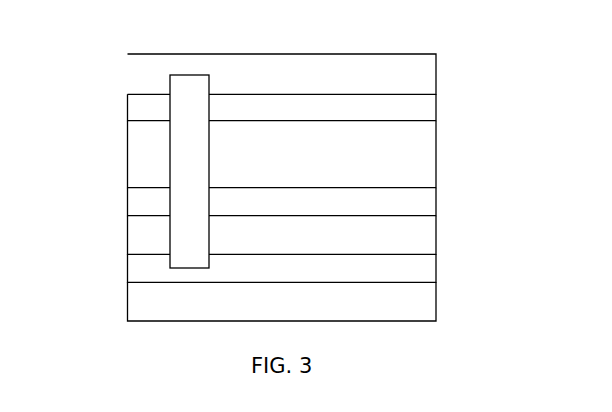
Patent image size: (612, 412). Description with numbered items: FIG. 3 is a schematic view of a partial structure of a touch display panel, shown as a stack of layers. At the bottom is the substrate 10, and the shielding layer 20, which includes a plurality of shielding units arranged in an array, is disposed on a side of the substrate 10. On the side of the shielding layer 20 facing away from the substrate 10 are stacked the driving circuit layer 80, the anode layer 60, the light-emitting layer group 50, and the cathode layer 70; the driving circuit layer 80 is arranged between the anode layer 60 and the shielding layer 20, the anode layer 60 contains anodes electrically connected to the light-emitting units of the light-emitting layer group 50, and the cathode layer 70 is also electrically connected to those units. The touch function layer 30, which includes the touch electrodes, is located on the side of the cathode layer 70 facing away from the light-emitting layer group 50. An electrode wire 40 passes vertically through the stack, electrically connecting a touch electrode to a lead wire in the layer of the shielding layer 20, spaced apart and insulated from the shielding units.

The substrate 10 is at (436, 306).
The shielding layer 20 is at (436, 273).
The touch function layer 30 is at (436, 79).
The electrode wire 40 is at (187, 171).
The light-emitting layer group 50 is at (436, 157).
The anode layer 60 is at (436, 199).
The cathode layer 70 is at (436, 106).
The driving circuit layer 80 is at (436, 240).